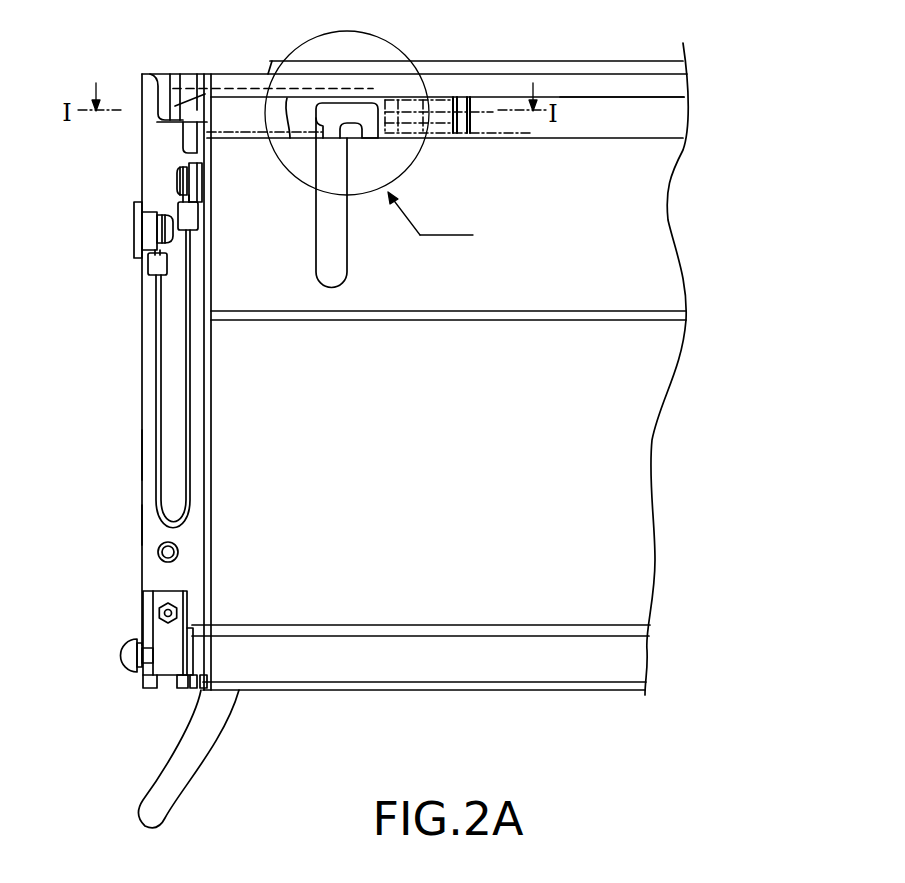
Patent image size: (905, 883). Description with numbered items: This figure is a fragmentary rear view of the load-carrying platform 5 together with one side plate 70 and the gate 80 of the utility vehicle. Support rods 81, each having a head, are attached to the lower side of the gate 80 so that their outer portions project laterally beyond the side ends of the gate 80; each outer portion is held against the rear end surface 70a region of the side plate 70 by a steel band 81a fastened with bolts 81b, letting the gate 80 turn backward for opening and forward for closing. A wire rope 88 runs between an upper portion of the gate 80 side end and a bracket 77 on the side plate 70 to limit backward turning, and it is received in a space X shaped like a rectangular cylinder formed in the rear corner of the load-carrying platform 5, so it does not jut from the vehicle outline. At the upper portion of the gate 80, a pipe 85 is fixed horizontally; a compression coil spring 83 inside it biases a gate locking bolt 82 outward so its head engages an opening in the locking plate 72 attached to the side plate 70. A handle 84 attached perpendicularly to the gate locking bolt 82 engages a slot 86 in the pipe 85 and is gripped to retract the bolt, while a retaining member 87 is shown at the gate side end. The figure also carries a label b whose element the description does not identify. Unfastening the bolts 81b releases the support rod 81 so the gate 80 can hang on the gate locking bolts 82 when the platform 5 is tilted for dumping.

The load-carrying platform 5 is at (633, 660).
The side plate 70 is at (142, 350).
The rear end surface 70a is at (147, 527).
The locking plate 72 is at (180, 138).
The bracket 77 is at (134, 230).
The gate 80 is at (663, 252).
The support rod 81 is at (120, 657).
The steel band 81a is at (168, 675).
The bolt 81b is at (164, 611).
The gate locking bolt 82 is at (240, 88).
The compression coil spring 83 is at (438, 100).
The handle 84 is at (337, 272).
The pipe 85 is at (583, 127).
The slot 86 is at (343, 107).
The retaining member 87 is at (148, 72).
The wire rope 88 is at (190, 403).
The space X is at (145, 452).
The detail region b is at (369, 133).